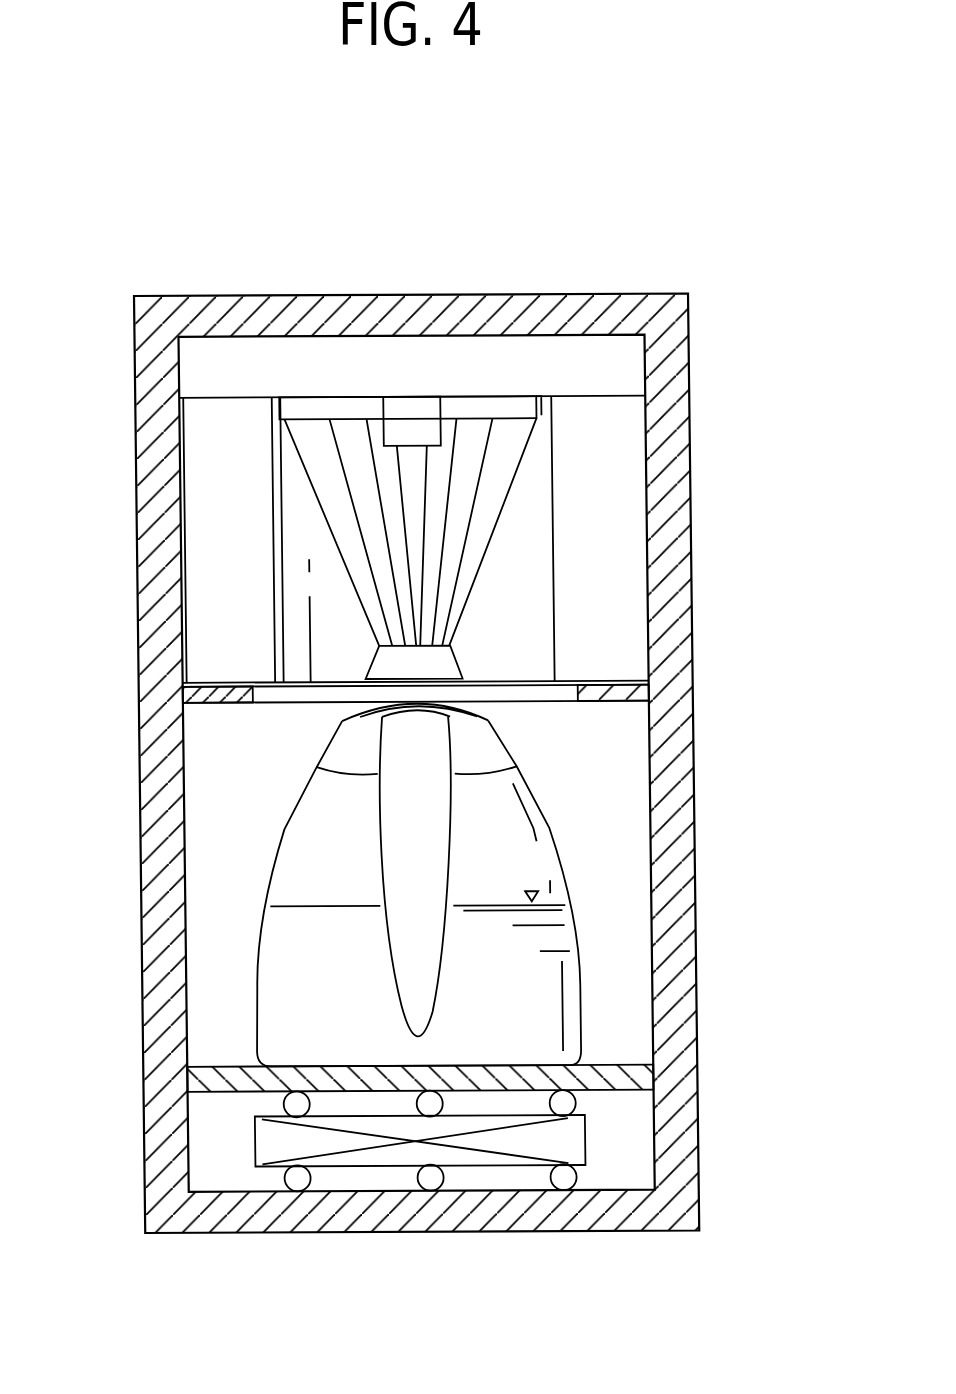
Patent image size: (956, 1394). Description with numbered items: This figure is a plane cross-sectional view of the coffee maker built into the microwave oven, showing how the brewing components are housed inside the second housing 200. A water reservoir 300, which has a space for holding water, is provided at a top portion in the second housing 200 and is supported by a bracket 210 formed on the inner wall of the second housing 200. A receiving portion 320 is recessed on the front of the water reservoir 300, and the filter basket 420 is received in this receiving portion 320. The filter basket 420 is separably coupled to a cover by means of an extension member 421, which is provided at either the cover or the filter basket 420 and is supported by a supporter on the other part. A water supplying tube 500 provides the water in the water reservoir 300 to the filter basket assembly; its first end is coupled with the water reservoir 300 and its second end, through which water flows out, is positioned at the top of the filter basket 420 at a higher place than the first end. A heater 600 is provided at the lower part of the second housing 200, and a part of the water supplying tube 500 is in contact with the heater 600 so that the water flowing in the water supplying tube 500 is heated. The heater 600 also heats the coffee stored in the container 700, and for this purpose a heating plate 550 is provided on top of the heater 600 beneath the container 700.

The second housing 200 is at (695, 731).
The bracket 210 is at (228, 704).
The water reservoir 300 is at (617, 542).
The receiving portion 320 is at (523, 622).
The filter basket 420 is at (317, 514).
The extension member 421 is at (416, 411).
The water supplying tube 500 is at (286, 1179).
The heating plate 550 is at (514, 1080).
The heater 600 is at (380, 1154).
The container 700 is at (539, 829).